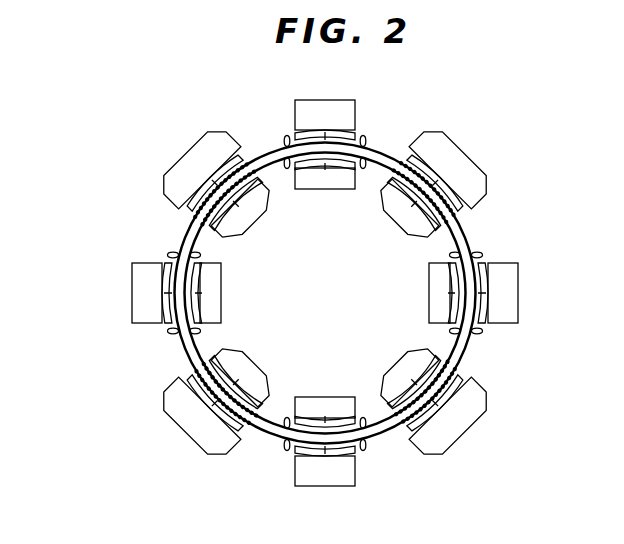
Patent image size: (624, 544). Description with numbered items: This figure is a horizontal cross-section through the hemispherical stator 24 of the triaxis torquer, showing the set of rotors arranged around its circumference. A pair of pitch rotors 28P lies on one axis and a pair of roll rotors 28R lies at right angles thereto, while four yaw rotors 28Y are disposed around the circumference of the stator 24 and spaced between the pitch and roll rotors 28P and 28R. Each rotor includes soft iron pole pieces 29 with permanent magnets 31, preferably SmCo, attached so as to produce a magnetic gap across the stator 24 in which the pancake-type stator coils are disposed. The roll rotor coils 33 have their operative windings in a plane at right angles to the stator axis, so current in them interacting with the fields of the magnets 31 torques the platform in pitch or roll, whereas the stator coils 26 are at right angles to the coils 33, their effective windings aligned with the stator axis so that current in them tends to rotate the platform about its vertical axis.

The hemispherical stator 24 is at (194, 385).
The stator coils 26 is at (259, 168).
The pitch rotors 28P is at (312, 201).
The roll rotors 28R is at (242, 295).
The yaw rotors 28Y is at (184, 136).
The soft iron pole pieces 29 is at (313, 106).
The permanent magnets 31 is at (346, 130).
The roll rotor coils 33 is at (197, 222).